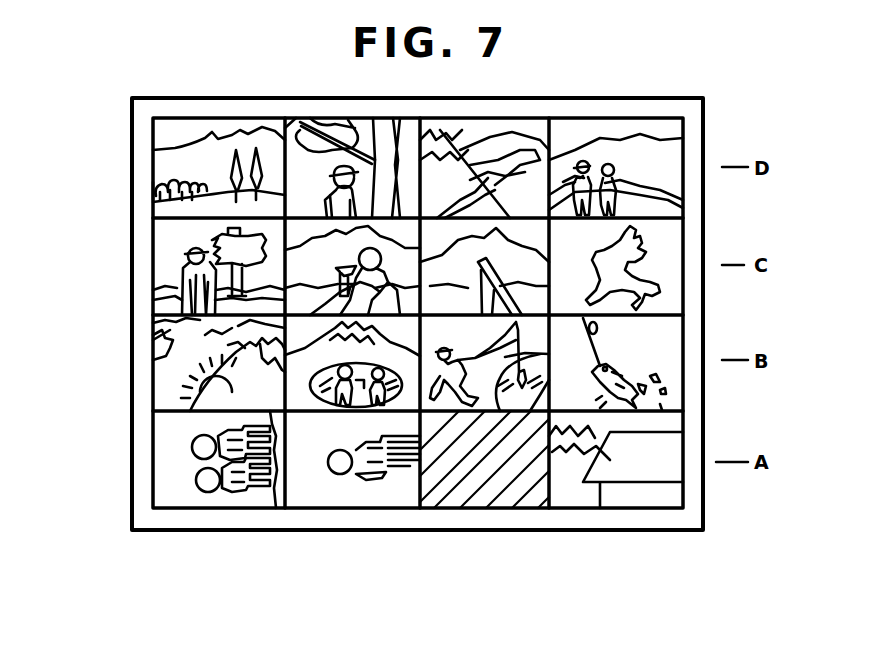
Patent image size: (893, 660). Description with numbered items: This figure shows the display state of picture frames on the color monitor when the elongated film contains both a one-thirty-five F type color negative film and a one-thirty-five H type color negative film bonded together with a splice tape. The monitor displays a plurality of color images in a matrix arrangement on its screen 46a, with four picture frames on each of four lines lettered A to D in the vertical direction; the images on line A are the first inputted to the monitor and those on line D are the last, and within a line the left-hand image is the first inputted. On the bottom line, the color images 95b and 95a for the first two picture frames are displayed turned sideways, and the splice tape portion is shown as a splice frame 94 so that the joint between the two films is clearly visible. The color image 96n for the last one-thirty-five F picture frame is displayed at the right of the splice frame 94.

The screen 46a is at (143, 176).
The color image 95b is at (190, 497).
The color image 95a is at (342, 493).
The splice frame 94 is at (480, 498).
The color image 96n is at (633, 497).